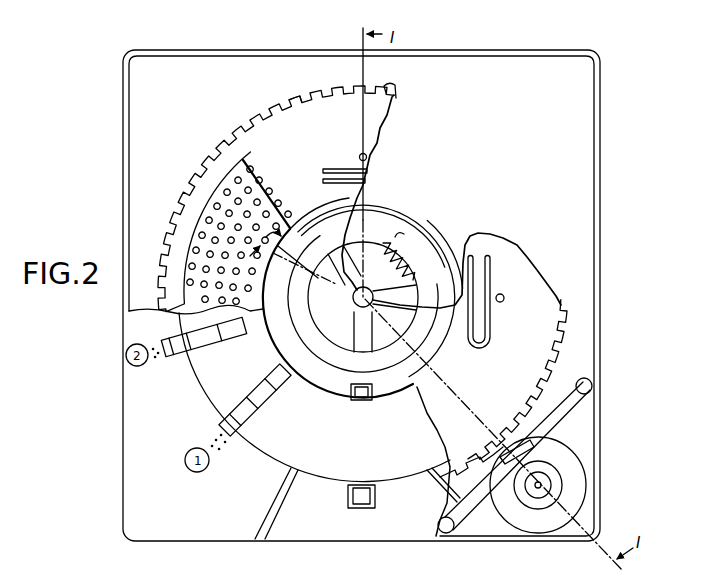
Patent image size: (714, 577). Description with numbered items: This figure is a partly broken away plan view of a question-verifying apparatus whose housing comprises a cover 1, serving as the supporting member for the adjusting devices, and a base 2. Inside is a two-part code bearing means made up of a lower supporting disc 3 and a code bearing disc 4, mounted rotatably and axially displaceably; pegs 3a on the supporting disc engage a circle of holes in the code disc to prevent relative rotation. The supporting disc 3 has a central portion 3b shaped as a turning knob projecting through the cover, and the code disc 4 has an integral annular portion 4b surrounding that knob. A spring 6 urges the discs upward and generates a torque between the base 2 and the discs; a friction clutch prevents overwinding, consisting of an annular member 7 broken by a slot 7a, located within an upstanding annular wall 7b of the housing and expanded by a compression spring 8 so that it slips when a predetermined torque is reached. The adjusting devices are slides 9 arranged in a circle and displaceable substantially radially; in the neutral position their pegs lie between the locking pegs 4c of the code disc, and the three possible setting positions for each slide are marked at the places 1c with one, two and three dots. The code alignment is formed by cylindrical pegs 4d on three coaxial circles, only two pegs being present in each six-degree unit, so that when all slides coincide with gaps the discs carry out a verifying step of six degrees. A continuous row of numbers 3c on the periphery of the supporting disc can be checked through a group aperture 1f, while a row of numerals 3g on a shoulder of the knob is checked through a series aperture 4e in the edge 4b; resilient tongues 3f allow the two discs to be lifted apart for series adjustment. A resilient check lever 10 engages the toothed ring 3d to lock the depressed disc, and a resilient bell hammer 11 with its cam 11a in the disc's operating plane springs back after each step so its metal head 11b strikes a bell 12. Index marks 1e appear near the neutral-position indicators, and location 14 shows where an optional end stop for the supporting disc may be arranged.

The cover 1 is at (125, 318).
The places marked with dots 1c is at (199, 386).
The index marks 1e is at (222, 450).
The group aperture 1f is at (350, 498).
The base 2 is at (593, 74).
The supporting disc 3 is at (385, 119).
The pegs 3a is at (370, 155).
The central portion shaped as a turning knob 3b is at (363, 297).
The row of numbers 3c is at (296, 95).
The toothed ring 3d is at (387, 88).
The resilient tongues 3f is at (490, 340).
The row of numerals 3g is at (358, 199).
The code bearing disc 4 is at (250, 172).
The integral annular portion 4b is at (276, 342).
The locking pegs 4c is at (251, 206).
The cylindrical pegs 4d is at (262, 220).
The series aperture 4e is at (350, 400).
The spring 6 is at (286, 264).
The annular member 7 is at (398, 225).
The slot 7a is at (412, 247).
The upstanding annular wall 7b is at (445, 236).
The compression spring 8 is at (432, 242).
The slides 9 is at (262, 408).
The resilient check lever 10 is at (555, 423).
The resilient bell hammer 11 is at (481, 495).
The cam 11a is at (500, 447).
The metal head 11b is at (505, 437).
The bell 12 is at (585, 478).
The location of end stop 14 is at (574, 367).